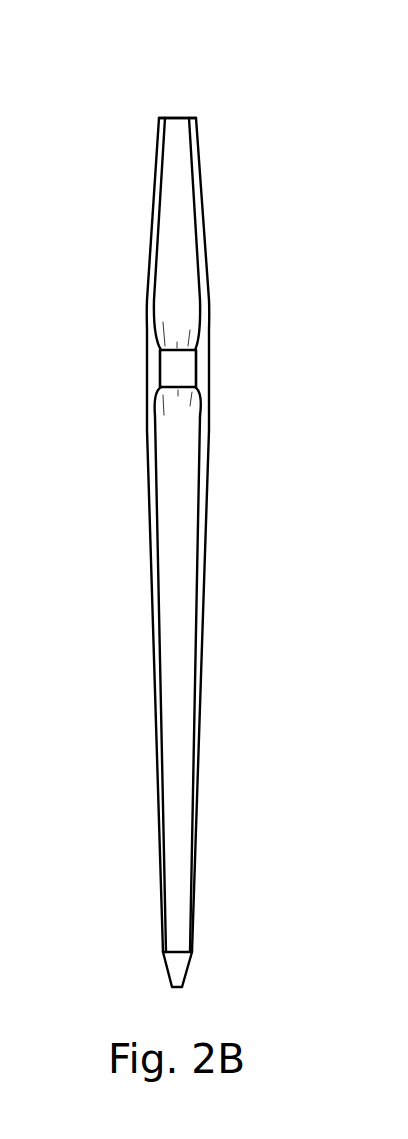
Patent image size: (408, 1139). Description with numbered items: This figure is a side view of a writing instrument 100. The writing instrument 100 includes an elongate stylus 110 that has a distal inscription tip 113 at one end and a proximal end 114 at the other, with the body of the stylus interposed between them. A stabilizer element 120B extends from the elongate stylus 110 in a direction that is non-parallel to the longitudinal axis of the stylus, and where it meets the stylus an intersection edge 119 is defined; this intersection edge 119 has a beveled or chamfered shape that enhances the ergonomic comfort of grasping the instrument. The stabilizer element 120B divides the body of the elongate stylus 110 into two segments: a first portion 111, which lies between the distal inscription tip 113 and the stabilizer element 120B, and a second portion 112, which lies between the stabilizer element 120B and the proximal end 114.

The writing instrument 100 is at (78, 67).
The elongate stylus 110 is at (136, 252).
The first portion 111 is at (186, 567).
The second portion 112 is at (178, 243).
The distal inscription tip 113 is at (181, 968).
The proximal end 114 is at (181, 118).
The intersection edge 119 is at (156, 398).
The stabilizer element 120B is at (187, 367).